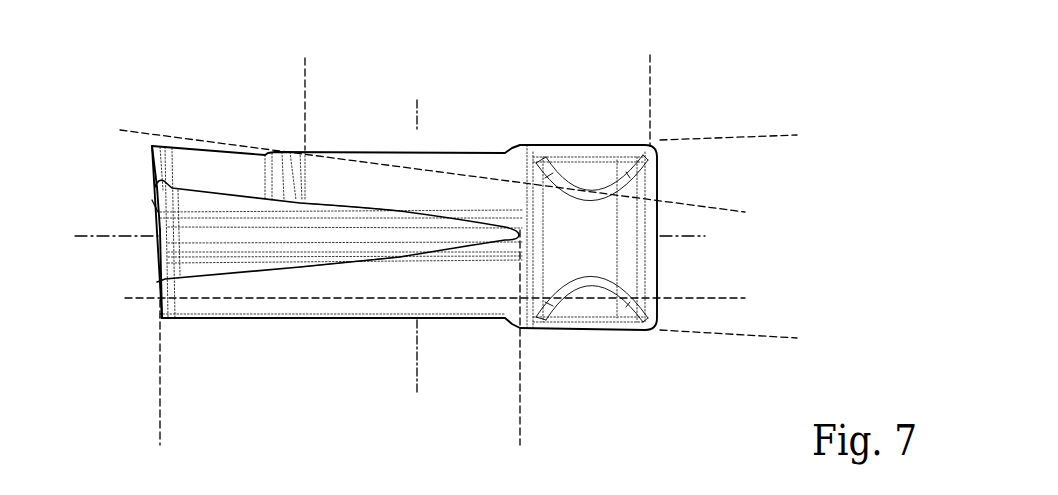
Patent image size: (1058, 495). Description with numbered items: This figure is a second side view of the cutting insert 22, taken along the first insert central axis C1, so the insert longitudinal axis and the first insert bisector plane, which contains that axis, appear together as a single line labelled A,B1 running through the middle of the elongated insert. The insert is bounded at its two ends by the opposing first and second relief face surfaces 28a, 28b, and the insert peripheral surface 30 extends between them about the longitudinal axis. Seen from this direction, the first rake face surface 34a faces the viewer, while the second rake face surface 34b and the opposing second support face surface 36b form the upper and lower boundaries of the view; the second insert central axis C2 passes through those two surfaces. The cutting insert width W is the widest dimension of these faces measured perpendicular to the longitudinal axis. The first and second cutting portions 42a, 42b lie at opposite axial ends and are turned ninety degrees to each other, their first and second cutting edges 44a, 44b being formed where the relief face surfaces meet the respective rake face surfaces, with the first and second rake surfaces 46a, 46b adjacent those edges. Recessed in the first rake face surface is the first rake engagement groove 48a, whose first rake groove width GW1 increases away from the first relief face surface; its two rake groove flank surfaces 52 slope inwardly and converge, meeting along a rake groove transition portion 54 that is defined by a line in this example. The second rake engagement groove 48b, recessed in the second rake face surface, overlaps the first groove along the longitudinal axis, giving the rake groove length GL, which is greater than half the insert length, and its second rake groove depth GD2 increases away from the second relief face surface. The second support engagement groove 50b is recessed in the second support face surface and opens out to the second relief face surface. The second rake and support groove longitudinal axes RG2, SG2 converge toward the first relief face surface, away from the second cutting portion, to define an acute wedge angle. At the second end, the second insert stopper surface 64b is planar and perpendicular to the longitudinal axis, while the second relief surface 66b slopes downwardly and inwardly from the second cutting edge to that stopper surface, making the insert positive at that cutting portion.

The cutting insert 22 is at (702, 95).
The first relief face surface 28a is at (668, 158).
The second relief face surface 28b is at (148, 201).
The insert peripheral surface 30 is at (469, 319).
The first rake face surface 34a is at (500, 285).
The second rake face surface 34b is at (360, 152).
The second support face surface 36b is at (292, 323).
The first cutting portion 42a is at (669, 353).
The second cutting portion 42b is at (122, 103).
The first cutting edge 44a is at (660, 281).
The second cutting edge 44b is at (152, 147).
The first rake surface 46a is at (603, 250).
The second rake surface 46b is at (200, 137).
The first rake engagement groove 48a is at (350, 226).
The second rake engagement groove 48b is at (583, 175).
The second support engagement groove 50b is at (243, 309).
The rake groove flank surfaces 52 is at (303, 222).
The rake groove transition portion 54 is at (407, 233).
The second insert stopper surface 64b is at (160, 283).
The second relief surface 66b is at (155, 212).
The first rake groove width GW1 is at (218, 270).
The second rake groove depth GD2 is at (478, 176).
The rake groove length GL is at (305, 67).
The first insert central axis C1 is at (413, 233).
The second insert central axis C2 is at (419, 120).
The second rake groove longitudinal axis RG2 is at (710, 206).
The second support groove longitudinal axis SG2 is at (708, 306).
The cutting insert width W is at (797, 135).
The insert longitudinal axis and first insert bisector plane A,B1 is at (90, 232).